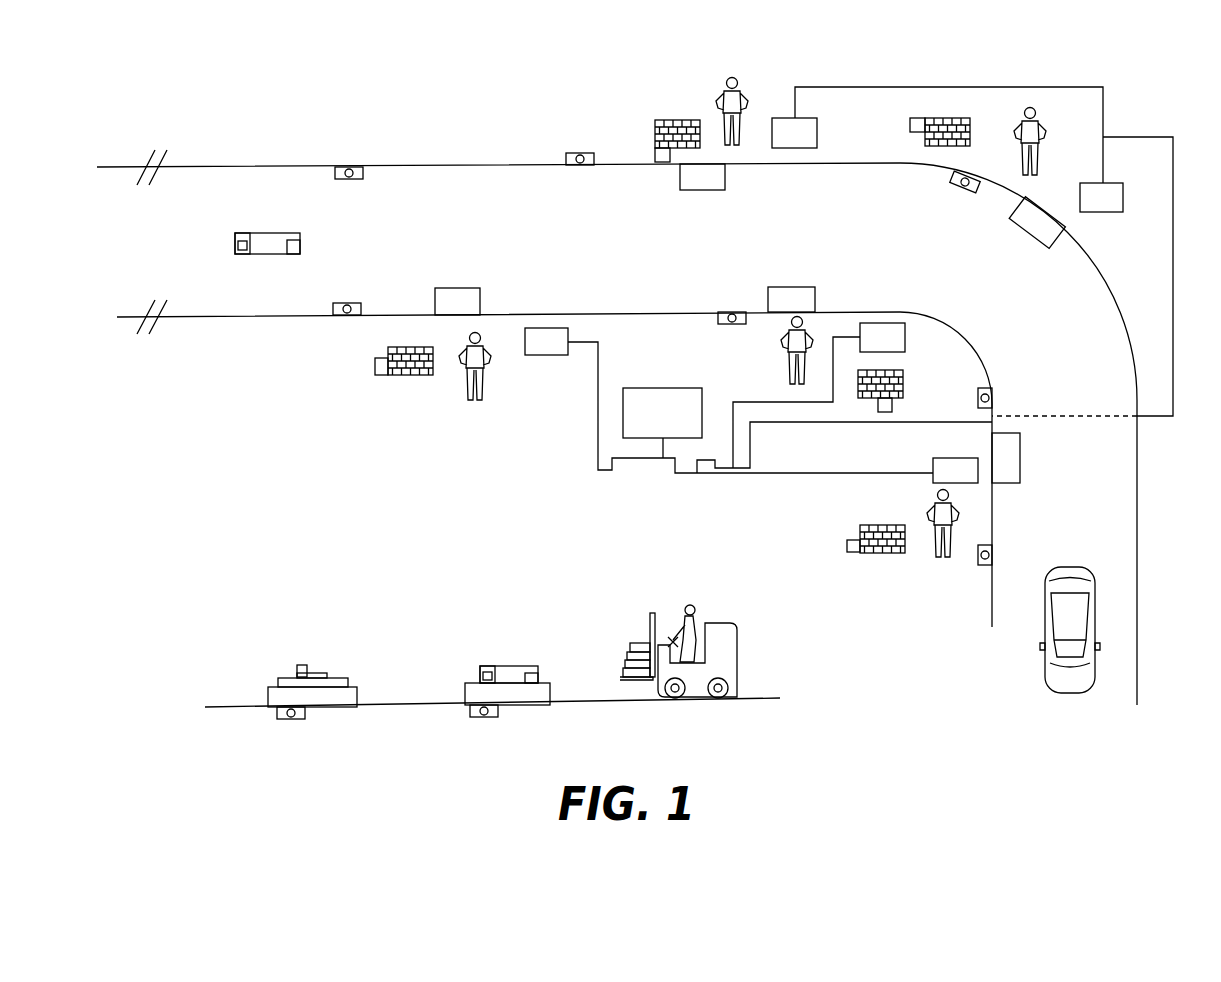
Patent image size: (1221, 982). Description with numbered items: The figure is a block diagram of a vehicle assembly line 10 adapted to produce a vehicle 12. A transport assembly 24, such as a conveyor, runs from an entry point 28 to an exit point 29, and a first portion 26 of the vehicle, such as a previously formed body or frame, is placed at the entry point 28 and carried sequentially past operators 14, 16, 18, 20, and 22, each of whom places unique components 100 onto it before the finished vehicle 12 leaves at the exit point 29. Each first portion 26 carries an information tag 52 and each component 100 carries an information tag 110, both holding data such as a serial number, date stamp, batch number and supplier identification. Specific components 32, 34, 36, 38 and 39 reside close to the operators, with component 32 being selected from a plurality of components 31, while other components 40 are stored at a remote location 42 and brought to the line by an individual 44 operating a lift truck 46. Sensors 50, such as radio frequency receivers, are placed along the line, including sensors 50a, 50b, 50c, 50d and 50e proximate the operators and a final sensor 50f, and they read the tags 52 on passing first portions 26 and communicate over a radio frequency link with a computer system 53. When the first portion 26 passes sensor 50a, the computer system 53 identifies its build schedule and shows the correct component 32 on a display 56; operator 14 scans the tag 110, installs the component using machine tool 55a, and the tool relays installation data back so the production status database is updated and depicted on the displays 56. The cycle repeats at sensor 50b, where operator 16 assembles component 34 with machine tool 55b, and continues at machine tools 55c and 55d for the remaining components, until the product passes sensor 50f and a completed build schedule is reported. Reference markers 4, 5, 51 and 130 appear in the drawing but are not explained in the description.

The controller network 4 is at (628, 462).
The connection 5 is at (644, 499).
The assembly line 10 is at (1130, 115).
The vehicle 12 is at (1045, 670).
The operator 14 is at (482, 402).
The operator 16 is at (745, 88).
The operator 18 is at (782, 370).
The operator 20 is at (1045, 122).
The operator 22 is at (937, 493).
The transport assembly 24 is at (1064, 527).
The first portion 26 is at (272, 256).
The entry point 28 is at (105, 167).
The exit point 29 is at (1137, 595).
The plurality of components 31 is at (428, 377).
The component 32 is at (403, 377).
The component 34 is at (655, 120).
The component 36 is at (900, 385).
The component 38 is at (970, 128).
The component 39 is at (882, 555).
The components 40 is at (322, 675).
The storage location 42 is at (270, 698).
The individual 44 is at (693, 605).
The lift truck 46 is at (737, 662).
The sensor 50 is at (352, 180).
The line sensor 50a is at (348, 316).
The line sensor 50b is at (575, 152).
The line sensor 50c is at (735, 324).
The line sensor 50d is at (966, 190).
The line sensor 50e is at (988, 385).
The final sensor 50f is at (985, 570).
The link 51 is at (663, 388).
The information tag 52 is at (300, 245).
The computer system 53 is at (662, 413).
The machine tool 55a is at (458, 290).
The machine tool 55b is at (700, 185).
The machine tool 55c is at (792, 295).
The machine tool 55d is at (1033, 232).
The display system 56 is at (790, 150).
The component 100 is at (240, 235).
The information tag 110 is at (237, 248).
The cart 130 is at (535, 690).